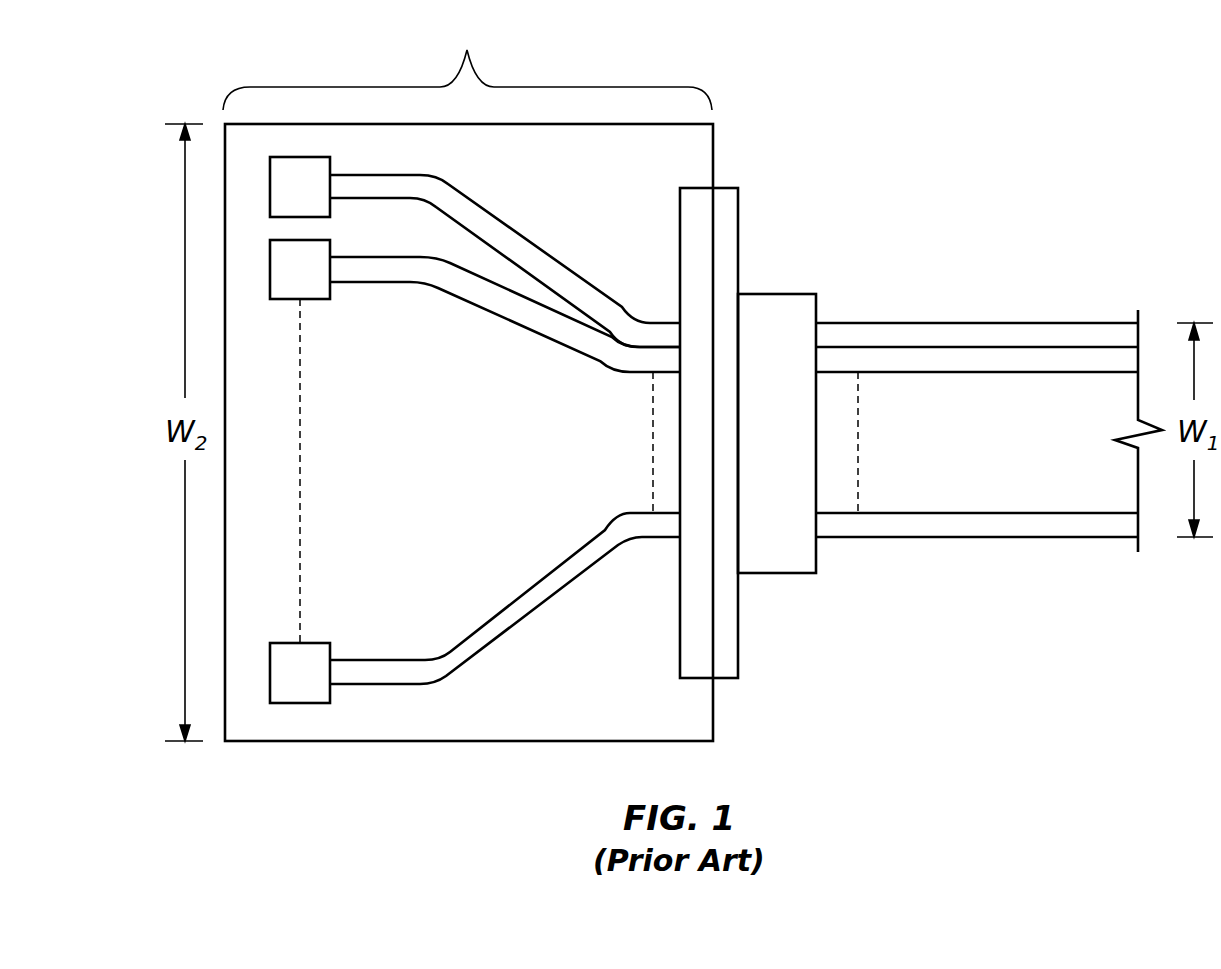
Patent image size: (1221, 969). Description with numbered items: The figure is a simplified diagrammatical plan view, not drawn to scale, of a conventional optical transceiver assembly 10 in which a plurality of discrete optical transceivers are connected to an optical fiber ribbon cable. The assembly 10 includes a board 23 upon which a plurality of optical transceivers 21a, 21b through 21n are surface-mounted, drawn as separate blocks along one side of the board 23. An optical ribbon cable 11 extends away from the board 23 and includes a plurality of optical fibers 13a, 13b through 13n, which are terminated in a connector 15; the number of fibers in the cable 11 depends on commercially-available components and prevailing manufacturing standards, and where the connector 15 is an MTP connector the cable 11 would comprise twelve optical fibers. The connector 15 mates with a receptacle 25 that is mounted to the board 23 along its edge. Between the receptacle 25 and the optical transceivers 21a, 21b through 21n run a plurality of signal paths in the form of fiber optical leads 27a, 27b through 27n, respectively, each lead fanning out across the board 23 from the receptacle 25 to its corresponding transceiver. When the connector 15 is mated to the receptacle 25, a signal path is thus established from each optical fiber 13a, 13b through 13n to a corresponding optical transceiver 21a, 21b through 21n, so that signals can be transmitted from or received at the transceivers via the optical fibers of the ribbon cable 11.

The optical transceiver assembly 10 is at (467, 60).
The board 23 is at (713, 157).
The receptacle 25 is at (740, 199).
The connector 15 is at (818, 301).
The optical ribbon cable 11 is at (911, 323).
The optical fiber 13a is at (972, 332).
The optical fiber 13b is at (1035, 360).
The optical fiber 13n is at (985, 525).
The optical transceiver 21a is at (305, 157).
The optical transceiver 21b is at (303, 299).
The optical transceiver 21n is at (303, 643).
The fiber optical lead 27a is at (538, 265).
The fiber optical lead 27b is at (557, 330).
The fiber optical lead 27n is at (557, 580).